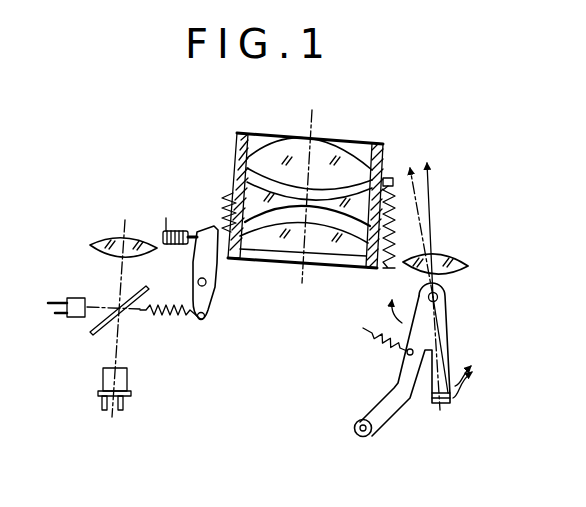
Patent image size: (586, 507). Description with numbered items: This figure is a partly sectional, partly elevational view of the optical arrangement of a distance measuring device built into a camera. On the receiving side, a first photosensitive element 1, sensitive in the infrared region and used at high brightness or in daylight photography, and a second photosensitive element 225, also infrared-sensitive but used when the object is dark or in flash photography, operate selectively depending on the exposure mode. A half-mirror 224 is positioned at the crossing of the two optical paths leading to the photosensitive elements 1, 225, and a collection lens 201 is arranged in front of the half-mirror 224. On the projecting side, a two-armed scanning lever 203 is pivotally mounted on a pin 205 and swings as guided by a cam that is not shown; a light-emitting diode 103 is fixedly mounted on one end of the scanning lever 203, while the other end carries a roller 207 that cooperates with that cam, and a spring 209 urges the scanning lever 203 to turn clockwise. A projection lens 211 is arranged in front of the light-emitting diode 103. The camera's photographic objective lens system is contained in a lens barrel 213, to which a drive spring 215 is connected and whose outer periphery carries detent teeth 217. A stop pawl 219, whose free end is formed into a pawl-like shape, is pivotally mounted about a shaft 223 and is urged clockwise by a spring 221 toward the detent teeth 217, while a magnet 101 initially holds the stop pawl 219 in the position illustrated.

The first photosensitive element 1 is at (97, 387).
The magnet 101 is at (178, 229).
The light-emitting diode 103 is at (450, 370).
The collection lens 201 is at (110, 236).
The two-armed scanning lever 203 is at (445, 322).
The pin 205 is at (437, 295).
The roller 207 is at (372, 437).
The spring 209 is at (380, 342).
The projection lens 211 is at (468, 265).
The lens barrel 213 is at (387, 148).
The drive spring 215 is at (387, 217).
The detent teeth 217 is at (227, 198).
The stop pawl 219 is at (208, 263).
The spring 221 is at (168, 322).
The shaft 223 is at (210, 286).
The half-mirror 224 is at (97, 333).
The second photosensitive element 225 is at (75, 297).